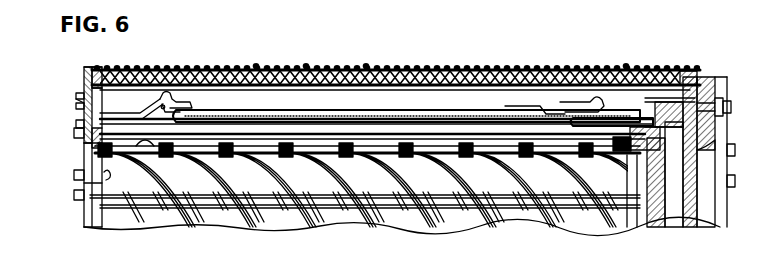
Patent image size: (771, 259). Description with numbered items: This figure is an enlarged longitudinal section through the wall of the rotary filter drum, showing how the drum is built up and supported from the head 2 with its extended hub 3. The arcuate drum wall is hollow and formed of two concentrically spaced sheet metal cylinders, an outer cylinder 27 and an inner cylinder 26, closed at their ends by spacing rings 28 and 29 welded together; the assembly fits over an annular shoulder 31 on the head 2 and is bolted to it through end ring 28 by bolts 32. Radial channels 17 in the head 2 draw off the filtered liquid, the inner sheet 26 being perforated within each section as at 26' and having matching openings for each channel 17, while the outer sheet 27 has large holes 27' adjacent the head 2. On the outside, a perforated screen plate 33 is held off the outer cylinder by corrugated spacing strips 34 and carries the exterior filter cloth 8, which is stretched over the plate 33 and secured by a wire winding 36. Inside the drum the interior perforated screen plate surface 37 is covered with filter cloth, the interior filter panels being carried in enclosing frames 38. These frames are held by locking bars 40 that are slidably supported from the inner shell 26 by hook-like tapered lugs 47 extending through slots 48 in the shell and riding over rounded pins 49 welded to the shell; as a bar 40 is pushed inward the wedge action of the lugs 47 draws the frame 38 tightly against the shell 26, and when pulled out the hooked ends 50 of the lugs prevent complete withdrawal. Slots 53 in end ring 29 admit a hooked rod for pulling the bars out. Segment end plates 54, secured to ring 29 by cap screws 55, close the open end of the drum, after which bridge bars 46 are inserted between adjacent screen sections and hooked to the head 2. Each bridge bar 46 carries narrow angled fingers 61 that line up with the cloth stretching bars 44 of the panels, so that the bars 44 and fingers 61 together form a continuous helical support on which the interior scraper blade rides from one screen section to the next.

The head 2 is at (710, 203).
The hub 3 is at (105, 178).
The exterior filter cloth 8 is at (384, 52).
The radial channels 17 is at (670, 198).
The inner sheet metal cylinder 26 is at (372, 115).
The perforations 26' is at (376, 108).
The outer sheet metal cylinder 27 is at (390, 61).
The large holes 27' is at (689, 61).
The end spacing ring 28 is at (668, 94).
The end spacing ring 29 is at (103, 101).
The annular shoulder 31 is at (675, 174).
The bolts 32 is at (731, 105).
The perforated screen plate 33 is at (485, 70).
The corrugated spacing strips 34 is at (306, 68).
The wire winding 36 is at (622, 68).
The interior screen plate surface 37 is at (144, 152).
The enclosing frame 38 is at (100, 184).
The locking bars 40 is at (535, 97).
The cloth stretching bars 44 is at (534, 190).
The bridge bars 46 is at (473, 203).
The tapered lugs 47 is at (592, 93).
The slots 48 is at (512, 118).
The pins 49 is at (210, 118).
The hooked ends 50 is at (625, 107).
The slots 53 is at (84, 112).
The segment end plates 54 is at (85, 76).
The cap screws 55 is at (76, 97).
The fingers 61 is at (398, 205).